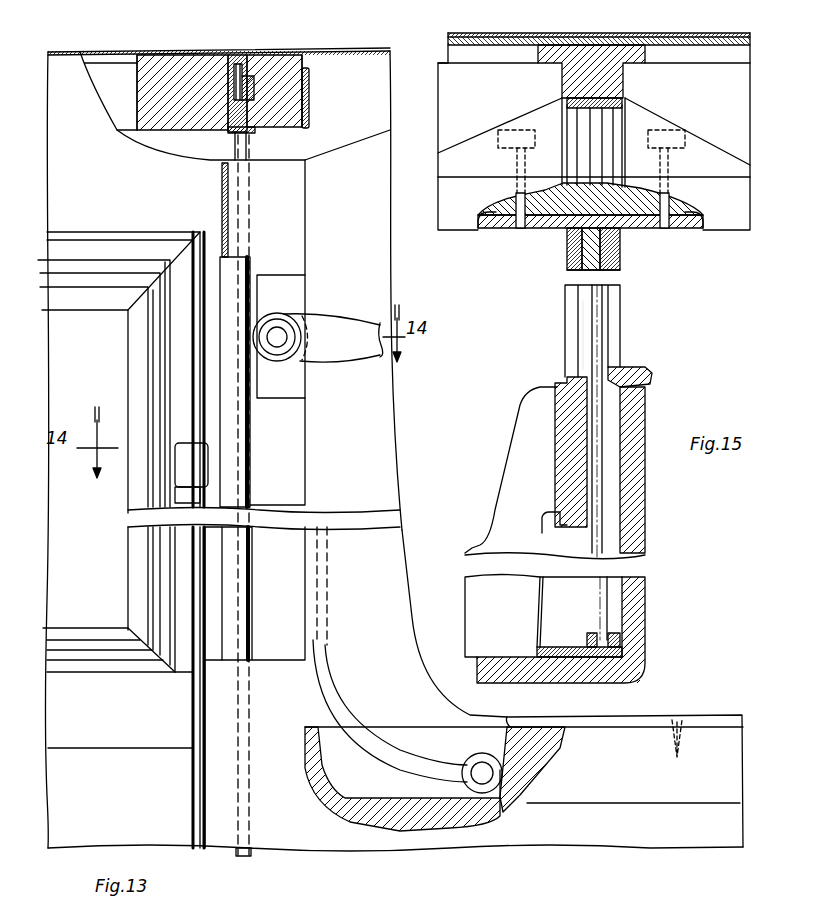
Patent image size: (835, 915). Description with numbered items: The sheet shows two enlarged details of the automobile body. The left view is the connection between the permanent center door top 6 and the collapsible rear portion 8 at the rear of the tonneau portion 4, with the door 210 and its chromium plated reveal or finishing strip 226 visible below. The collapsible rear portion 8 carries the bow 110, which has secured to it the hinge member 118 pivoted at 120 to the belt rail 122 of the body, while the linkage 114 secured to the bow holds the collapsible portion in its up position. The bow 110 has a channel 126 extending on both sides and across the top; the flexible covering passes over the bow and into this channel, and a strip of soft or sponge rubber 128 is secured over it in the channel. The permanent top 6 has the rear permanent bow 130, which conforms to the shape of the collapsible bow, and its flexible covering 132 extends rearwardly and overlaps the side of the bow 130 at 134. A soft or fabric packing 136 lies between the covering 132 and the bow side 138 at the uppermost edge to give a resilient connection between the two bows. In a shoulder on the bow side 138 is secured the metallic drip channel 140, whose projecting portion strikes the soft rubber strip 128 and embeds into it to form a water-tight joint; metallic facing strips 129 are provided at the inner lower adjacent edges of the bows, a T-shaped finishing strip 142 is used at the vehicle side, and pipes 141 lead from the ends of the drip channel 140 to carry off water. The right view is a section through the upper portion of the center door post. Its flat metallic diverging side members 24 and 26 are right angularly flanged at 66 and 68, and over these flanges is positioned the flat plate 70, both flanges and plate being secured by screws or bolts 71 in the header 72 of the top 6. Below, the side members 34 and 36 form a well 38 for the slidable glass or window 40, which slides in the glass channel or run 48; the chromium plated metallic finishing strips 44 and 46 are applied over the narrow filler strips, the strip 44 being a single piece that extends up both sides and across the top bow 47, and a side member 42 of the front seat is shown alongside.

In FIG. 13, the tonneau portion 4 is at (710, 733).
In FIG. 13, the center door top 6 is at (48, 52).
In FIG. 13, the collapsible rear portion 8 is at (380, 63).
In FIG. 13, the bow 110 is at (300, 53).
In FIG. 13, the linkage 114 is at (335, 318).
In FIG. 13, the hinge member 118 is at (390, 747).
In FIG. 13, the pivot 120 is at (482, 785).
In FIG. 13, the belt rail 122 is at (527, 788).
In FIG. 13, the channel 126 is at (283, 46).
In FIG. 13, the sponge rubber strip 128 is at (305, 88).
In FIG. 13, the metallic facing strips 129 is at (242, 132).
In FIG. 13, the rear permanent bow 130 is at (158, 56).
In FIG. 13, the flexible covering 132 is at (107, 63).
In FIG. 13, the overlap 134 is at (244, 55).
In FIG. 13, the packing 136 is at (230, 58).
In FIG. 13, the bow side 138 is at (138, 94).
In FIG. 13, the drip channel 140 is at (233, 131).
In FIG. 13, the pipes 141 is at (258, 850).
In FIG. 13, the T-shaped finishing strip 142 is at (243, 477).
In FIG. 13, the door 210 is at (50, 792).
In FIG. 13, the reveal or finishing strip 226 is at (137, 347).
In FIG. 15, the side member 24 is at (620, 267).
In FIG. 15, the side member 26 is at (567, 268).
In FIG. 15, the side member 34 is at (640, 481).
In FIG. 15, the side member 36 is at (563, 438).
In FIG. 15, the well 38 is at (615, 426).
In FIG. 15, the slidable glass or window 40 is at (597, 590).
In FIG. 15, the side member of the front seat 42 is at (503, 488).
In FIG. 15, the metallic finishing strip 44 is at (625, 85).
In FIG. 15, the metallic finishing strip 46 is at (578, 315).
In FIG. 15, the top bow 47 is at (563, 79).
In FIG. 15, the glass channel or run 48 is at (607, 321).
In FIG. 15, the flange 66 is at (687, 233).
In FIG. 15, the flange 68 is at (493, 233).
In FIG. 15, the flat plate 70 is at (548, 214).
In FIG. 15, the screws or bolts 71 is at (507, 202).
In FIG. 15, the header 72 is at (487, 186).